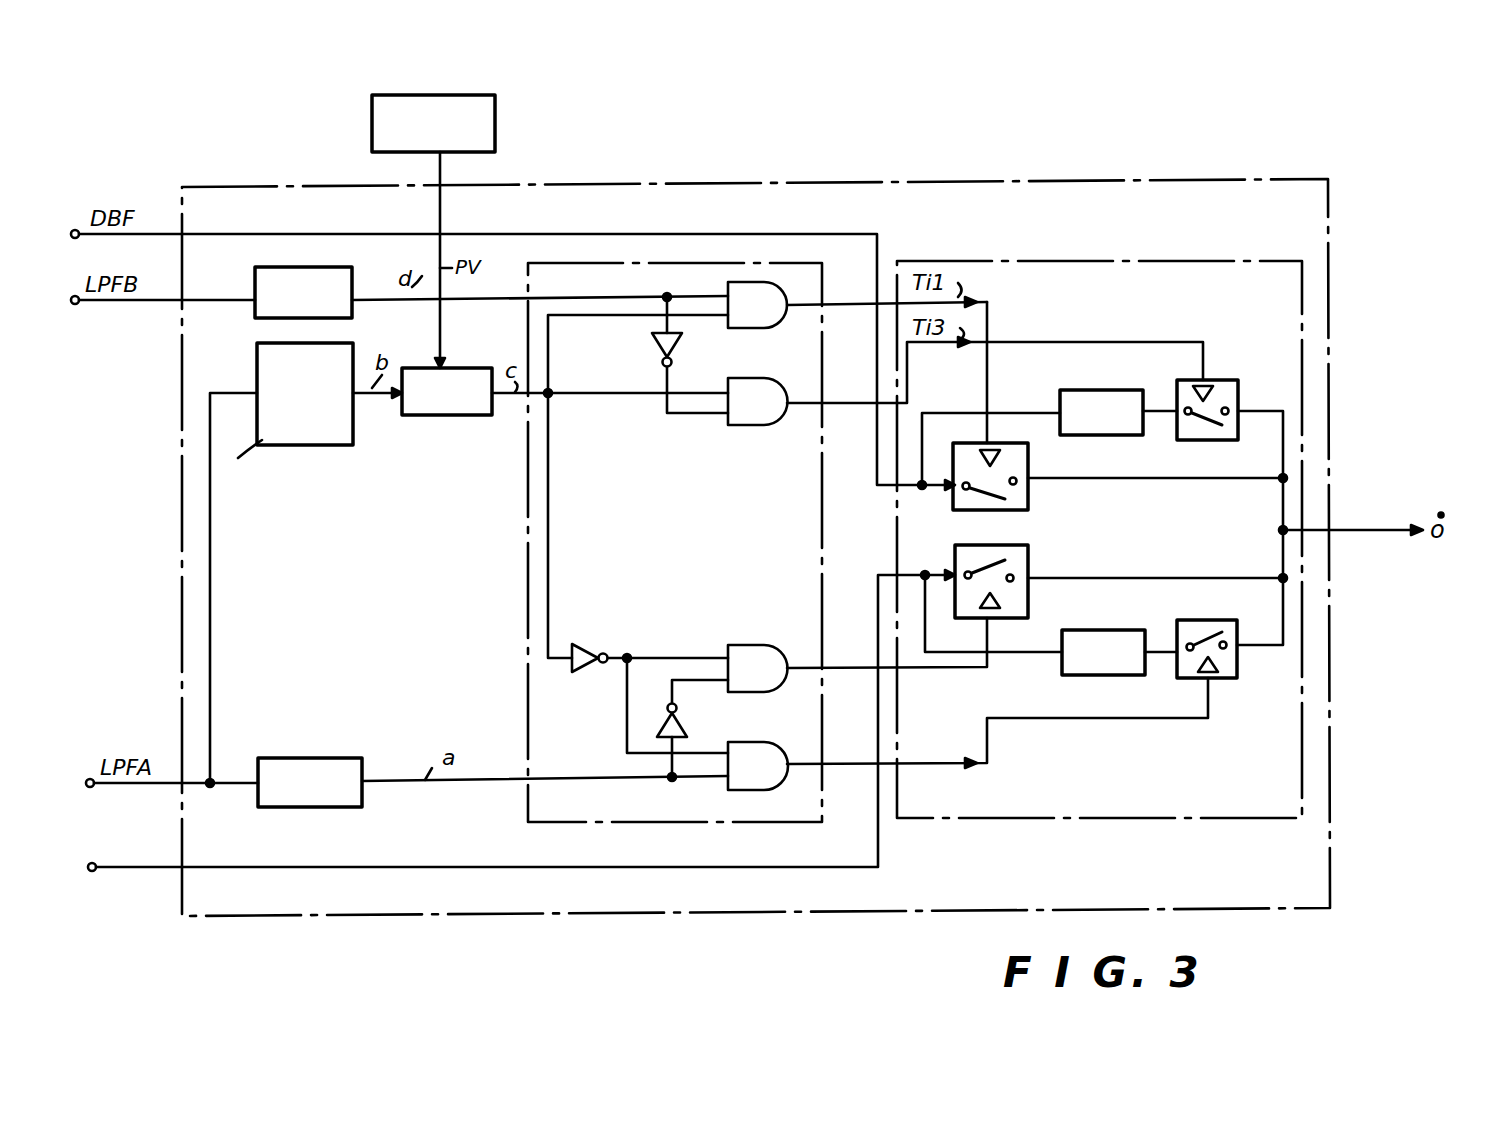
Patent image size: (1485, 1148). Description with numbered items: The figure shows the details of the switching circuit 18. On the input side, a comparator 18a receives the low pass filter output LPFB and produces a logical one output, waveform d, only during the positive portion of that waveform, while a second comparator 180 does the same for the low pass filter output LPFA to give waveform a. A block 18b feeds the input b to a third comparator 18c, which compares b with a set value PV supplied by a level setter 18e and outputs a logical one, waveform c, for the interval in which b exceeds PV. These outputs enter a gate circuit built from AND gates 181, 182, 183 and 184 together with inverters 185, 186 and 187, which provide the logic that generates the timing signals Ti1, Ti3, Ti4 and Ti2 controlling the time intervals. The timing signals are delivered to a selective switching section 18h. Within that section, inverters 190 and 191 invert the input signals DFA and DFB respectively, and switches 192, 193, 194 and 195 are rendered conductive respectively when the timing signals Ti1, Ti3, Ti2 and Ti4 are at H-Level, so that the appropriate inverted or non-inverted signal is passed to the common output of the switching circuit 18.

The switching circuit 18 is at (435, 866).
The selective switching section 18h is at (470, 917).
The level setter 18e is at (498, 113).
The comparator 18a is at (365, 252).
The full wave rectifier 18b is at (268, 372).
The third comparator 18c is at (452, 418).
The second comparator 180 is at (345, 758).
The AND gate 181 is at (740, 333).
The AND gate 182 is at (735, 428).
The AND gate 183 is at (782, 625).
The AND gate 184 is at (780, 735).
The inverter 185 is at (655, 350).
The inverter 186 is at (588, 648).
The inverter 187 is at (683, 727).
The inverter 190 is at (1106, 390).
The inverter 191 is at (1082, 630).
The switch 192 is at (1028, 500).
The switch 193 is at (1182, 442).
The switch 194 is at (1187, 622).
The switch 195 is at (1018, 568).